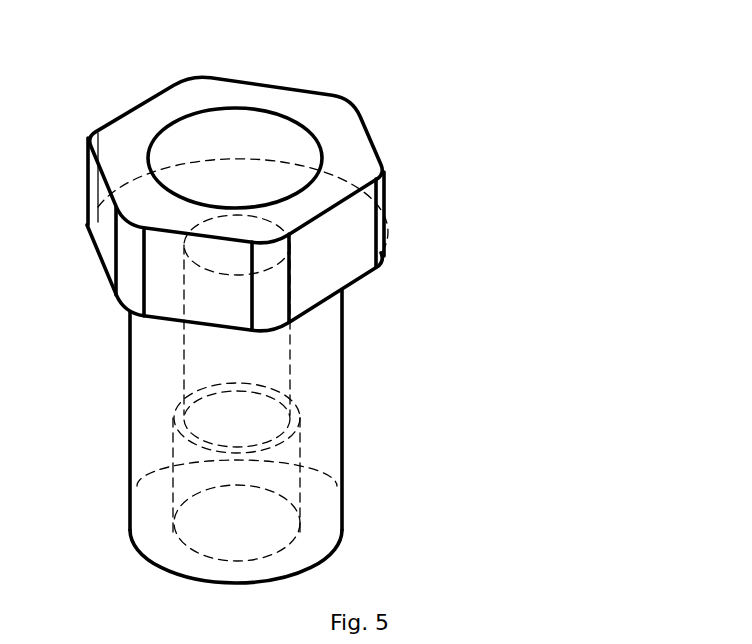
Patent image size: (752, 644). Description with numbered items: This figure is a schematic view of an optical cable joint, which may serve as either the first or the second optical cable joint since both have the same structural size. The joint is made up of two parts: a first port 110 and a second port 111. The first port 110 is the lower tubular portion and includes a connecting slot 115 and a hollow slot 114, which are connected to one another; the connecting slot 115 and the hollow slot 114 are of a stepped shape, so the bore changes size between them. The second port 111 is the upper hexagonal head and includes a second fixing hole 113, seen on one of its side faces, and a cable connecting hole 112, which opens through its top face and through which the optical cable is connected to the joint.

The first port 110 is at (142, 415).
The second port 111 is at (346, 186).
The cable connecting hole 112 is at (247, 181).
The second fixing hole 113 is at (445, 250).
The hollow slot 114 is at (390, 334).
The connecting slot 115 is at (375, 499).